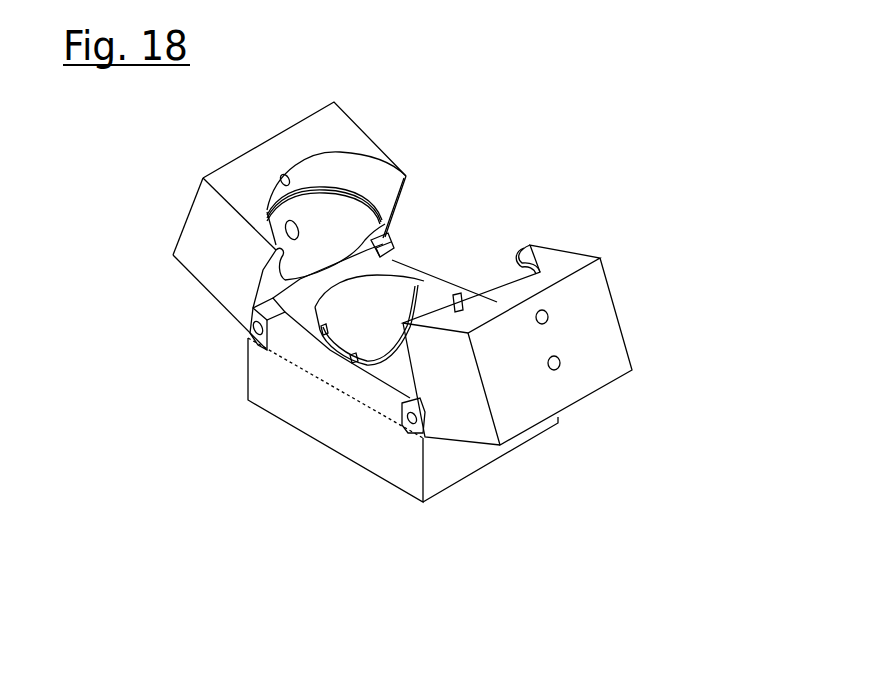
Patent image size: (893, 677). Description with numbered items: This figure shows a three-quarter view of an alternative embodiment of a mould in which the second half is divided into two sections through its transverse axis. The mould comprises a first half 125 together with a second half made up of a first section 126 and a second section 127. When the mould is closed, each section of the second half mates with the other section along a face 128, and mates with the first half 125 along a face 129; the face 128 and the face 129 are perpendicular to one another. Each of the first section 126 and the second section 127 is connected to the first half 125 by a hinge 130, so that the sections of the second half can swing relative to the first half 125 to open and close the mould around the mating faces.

The first half 125 is at (323, 432).
The first section 126 is at (190, 255).
The second section 127 is at (607, 332).
The face 128 is at (355, 133).
The face 129 is at (382, 222).
The hinge 130 is at (408, 432).